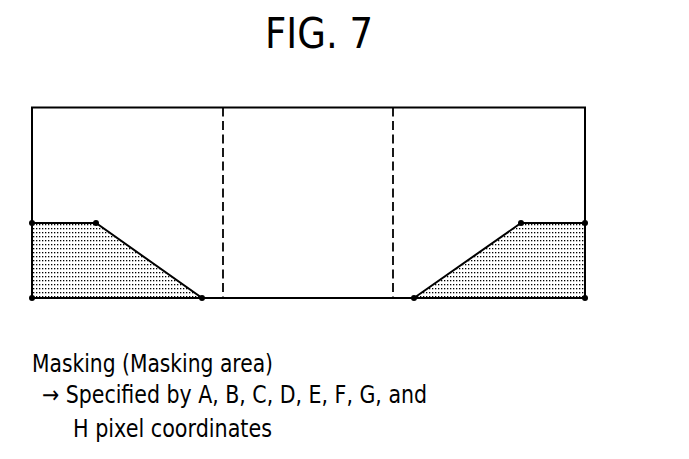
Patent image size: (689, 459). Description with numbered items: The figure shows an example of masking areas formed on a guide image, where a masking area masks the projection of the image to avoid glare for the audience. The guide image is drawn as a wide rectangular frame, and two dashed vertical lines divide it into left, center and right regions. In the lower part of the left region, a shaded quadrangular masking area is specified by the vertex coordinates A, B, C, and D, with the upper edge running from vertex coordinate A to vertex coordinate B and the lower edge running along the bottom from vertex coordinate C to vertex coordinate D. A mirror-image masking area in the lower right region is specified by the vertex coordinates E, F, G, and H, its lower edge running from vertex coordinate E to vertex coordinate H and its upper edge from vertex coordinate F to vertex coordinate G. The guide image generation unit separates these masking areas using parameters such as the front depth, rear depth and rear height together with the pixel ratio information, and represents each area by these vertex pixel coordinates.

The vertex coordinate A is at (27, 214).
The vertex coordinate B is at (96, 214).
The vertex coordinate C is at (33, 308).
The vertex coordinate D is at (202, 308).
The vertex coordinate E is at (414, 308).
The vertex coordinate F is at (521, 214).
The vertex coordinate G is at (590, 214).
The vertex coordinate H is at (585, 308).